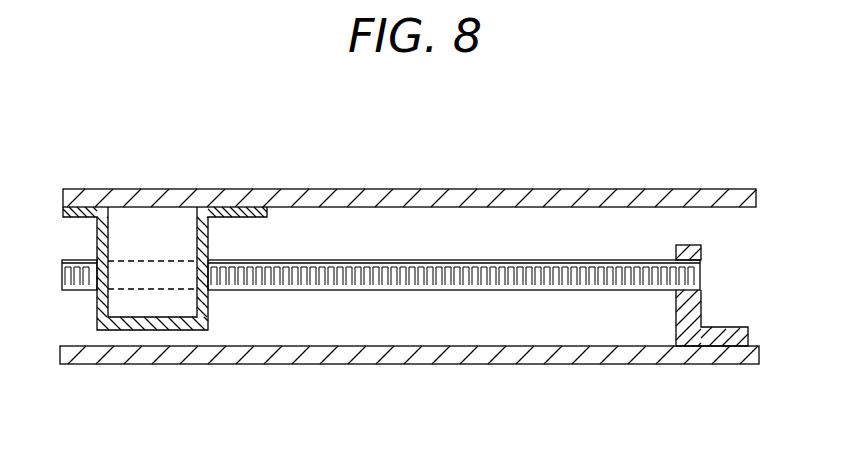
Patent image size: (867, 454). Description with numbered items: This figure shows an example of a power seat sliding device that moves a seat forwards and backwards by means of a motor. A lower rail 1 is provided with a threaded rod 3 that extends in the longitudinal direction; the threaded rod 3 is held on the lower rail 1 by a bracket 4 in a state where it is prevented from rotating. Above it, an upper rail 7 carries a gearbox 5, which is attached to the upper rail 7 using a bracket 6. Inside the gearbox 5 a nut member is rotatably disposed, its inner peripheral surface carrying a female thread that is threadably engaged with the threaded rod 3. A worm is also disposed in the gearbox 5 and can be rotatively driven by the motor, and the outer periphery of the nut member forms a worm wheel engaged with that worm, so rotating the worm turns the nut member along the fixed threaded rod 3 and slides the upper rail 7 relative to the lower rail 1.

The lower rail 1 is at (533, 355).
The threaded rod 3 is at (340, 262).
The bracket 4 is at (723, 333).
The gearbox 5 is at (147, 230).
The bracket 6 is at (229, 213).
The upper rail 7 is at (497, 200).